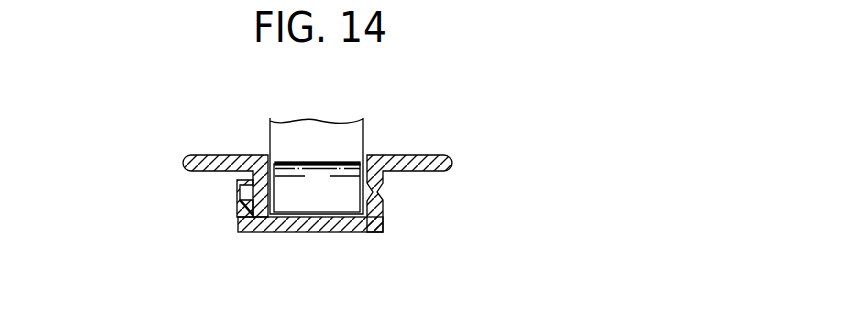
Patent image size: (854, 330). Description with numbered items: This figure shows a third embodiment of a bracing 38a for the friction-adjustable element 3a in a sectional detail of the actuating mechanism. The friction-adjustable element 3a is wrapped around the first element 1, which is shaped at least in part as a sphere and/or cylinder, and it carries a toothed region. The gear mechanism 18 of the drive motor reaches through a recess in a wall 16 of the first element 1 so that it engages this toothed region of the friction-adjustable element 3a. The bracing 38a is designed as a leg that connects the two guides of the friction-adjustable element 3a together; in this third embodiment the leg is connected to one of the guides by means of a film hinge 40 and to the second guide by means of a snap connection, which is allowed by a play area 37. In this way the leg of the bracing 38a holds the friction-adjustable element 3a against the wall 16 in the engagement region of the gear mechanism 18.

The first element 1 is at (205, 182).
The friction-adjustable element 3a is at (312, 193).
The wall 16 is at (423, 171).
The gear mechanism 18 is at (343, 135).
The play area 37 is at (367, 218).
The bracing 38a is at (263, 228).
The film hinge 40 is at (378, 193).